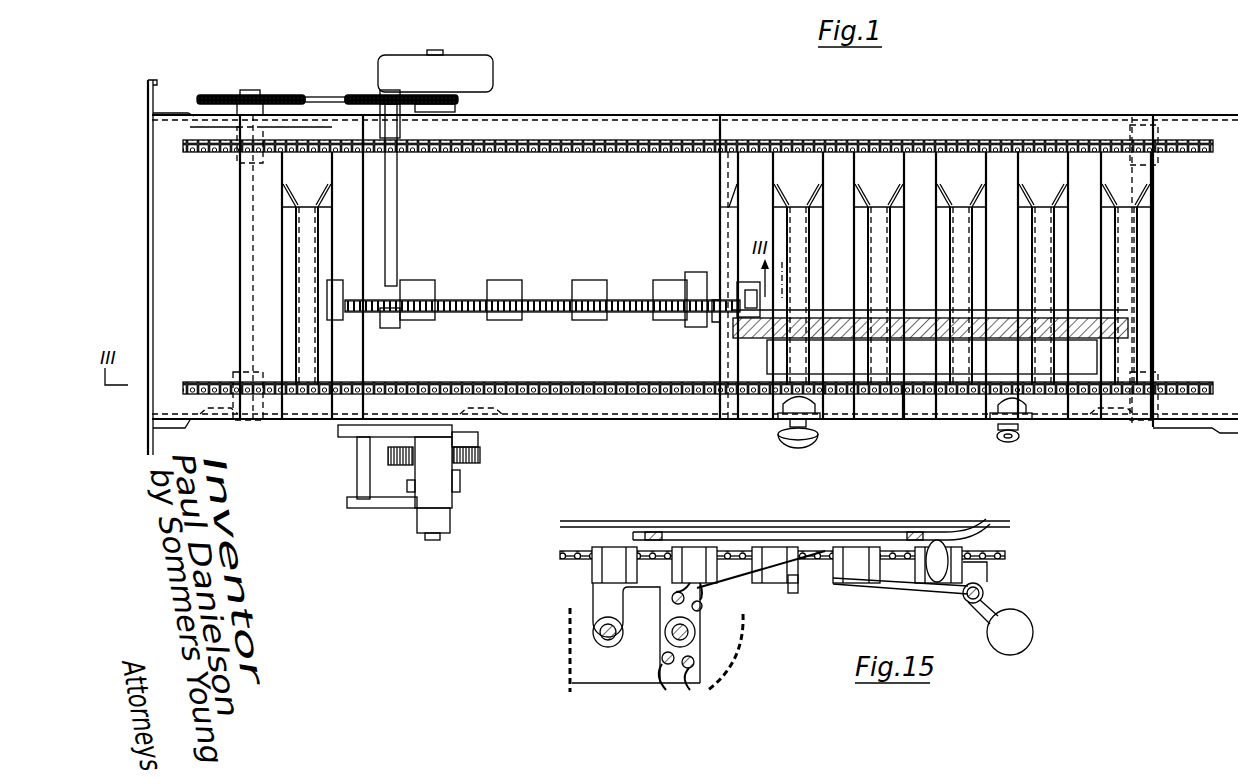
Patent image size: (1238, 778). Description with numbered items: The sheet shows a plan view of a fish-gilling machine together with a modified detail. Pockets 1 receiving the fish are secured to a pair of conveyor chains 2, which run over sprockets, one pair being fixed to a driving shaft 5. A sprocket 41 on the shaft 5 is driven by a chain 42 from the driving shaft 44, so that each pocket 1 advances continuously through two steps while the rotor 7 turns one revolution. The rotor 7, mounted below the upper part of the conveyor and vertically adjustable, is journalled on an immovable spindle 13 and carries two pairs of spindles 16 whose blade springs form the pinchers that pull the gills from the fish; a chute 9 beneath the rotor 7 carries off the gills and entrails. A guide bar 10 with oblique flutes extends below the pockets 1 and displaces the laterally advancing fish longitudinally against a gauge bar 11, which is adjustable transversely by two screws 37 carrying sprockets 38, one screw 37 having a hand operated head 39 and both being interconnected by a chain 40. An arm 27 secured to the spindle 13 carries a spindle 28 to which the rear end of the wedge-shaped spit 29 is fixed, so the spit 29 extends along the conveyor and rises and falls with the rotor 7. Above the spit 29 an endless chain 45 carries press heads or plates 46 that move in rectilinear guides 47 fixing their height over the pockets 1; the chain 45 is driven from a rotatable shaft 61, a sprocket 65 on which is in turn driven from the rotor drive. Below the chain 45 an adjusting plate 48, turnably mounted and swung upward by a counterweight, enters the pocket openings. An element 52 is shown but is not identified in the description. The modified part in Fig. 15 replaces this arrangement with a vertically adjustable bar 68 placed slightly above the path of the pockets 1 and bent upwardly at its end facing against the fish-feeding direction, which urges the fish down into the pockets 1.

In FIG. 1, the pockets 1 is at (978, 250).
In FIG. 15, the pockets 1 is at (794, 583).
In FIG. 1, the conveyor chains 2 is at (606, 140).
In FIG. 15, the conveyor chains 2 is at (581, 552).
In FIG. 1, the driving shaft 5 is at (243, 200).
In FIG. 1, the rotor 7 is at (470, 465).
In FIG. 15, the chute 9 is at (742, 636).
In FIG. 1, the guide bar 10 is at (1128, 327).
In FIG. 1, the gauge bar 11 is at (1086, 375).
In FIG. 1, the spindle 13 is at (433, 541).
In FIG. 15, the spindle 13 is at (687, 634).
In FIG. 15, the spindles 16 is at (700, 606).
In FIG. 1, the arm 27 is at (386, 508).
In FIG. 1, the spindle 28 is at (359, 470).
In FIG. 15, the spindle 28 is at (611, 640).
In FIG. 15, the wedge-shaped spit 29 is at (654, 585).
In FIG. 1, the screw 37 is at (1000, 437).
In FIG. 1, the sprocket 38 is at (800, 398).
In FIG. 1, the hand operated head 39 is at (797, 452).
In FIG. 1, the chain 40 is at (904, 400).
In FIG. 1, the sprocket 41 is at (225, 97).
In FIG. 1, the chain 42 is at (313, 97).
In FIG. 1, the driving shaft 44 is at (434, 55).
In FIG. 1, the endless chain 45 is at (633, 299).
In FIG. 1, the press heads or plates 46 is at (590, 280).
In FIG. 1, the rectilinear guides 47 is at (713, 321).
In FIG. 15, the adjusting plate 48 is at (895, 586).
In FIG. 1, the frame end 52 is at (1222, 148).
In FIG. 1, the rotatable shaft 61 is at (397, 204).
In FIG. 1, the sprocket 65 is at (350, 95).
In FIG. 15, the vertically adjustable bar 68 is at (696, 536).